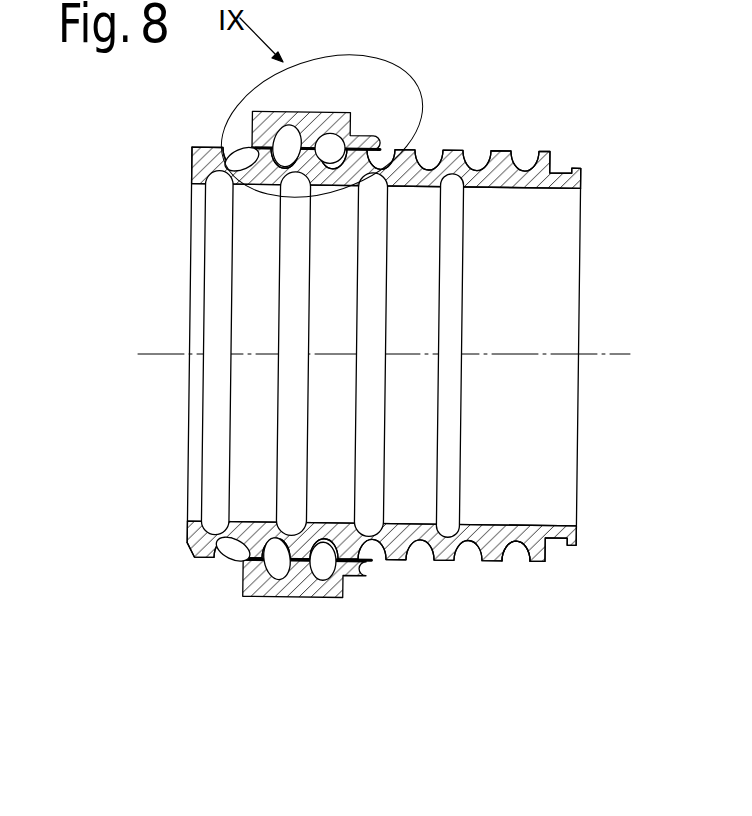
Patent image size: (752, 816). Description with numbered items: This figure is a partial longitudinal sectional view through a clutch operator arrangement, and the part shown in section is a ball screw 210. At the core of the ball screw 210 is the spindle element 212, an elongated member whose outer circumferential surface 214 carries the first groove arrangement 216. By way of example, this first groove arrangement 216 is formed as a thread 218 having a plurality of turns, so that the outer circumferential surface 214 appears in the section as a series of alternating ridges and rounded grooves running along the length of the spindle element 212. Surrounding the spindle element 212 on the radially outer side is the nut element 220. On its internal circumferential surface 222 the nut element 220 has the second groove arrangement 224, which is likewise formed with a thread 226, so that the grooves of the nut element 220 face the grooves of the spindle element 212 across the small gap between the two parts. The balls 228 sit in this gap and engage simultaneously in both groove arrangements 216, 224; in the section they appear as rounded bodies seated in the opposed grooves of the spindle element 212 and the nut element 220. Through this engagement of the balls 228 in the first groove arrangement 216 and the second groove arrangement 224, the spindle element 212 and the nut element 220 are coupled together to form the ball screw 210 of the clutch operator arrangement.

The ball screw 210 is at (582, 132).
The spindle element 212 is at (581, 291).
The outer circumferential surface 214 is at (503, 150).
The first groove arrangement 216 is at (472, 558).
The thread 218 is at (518, 558).
The nut element 220 is at (260, 600).
The internal circumferential surface 222 is at (253, 190).
The second groove arrangement 224 is at (190, 545).
The thread 226 is at (277, 598).
The balls 228 is at (353, 577).